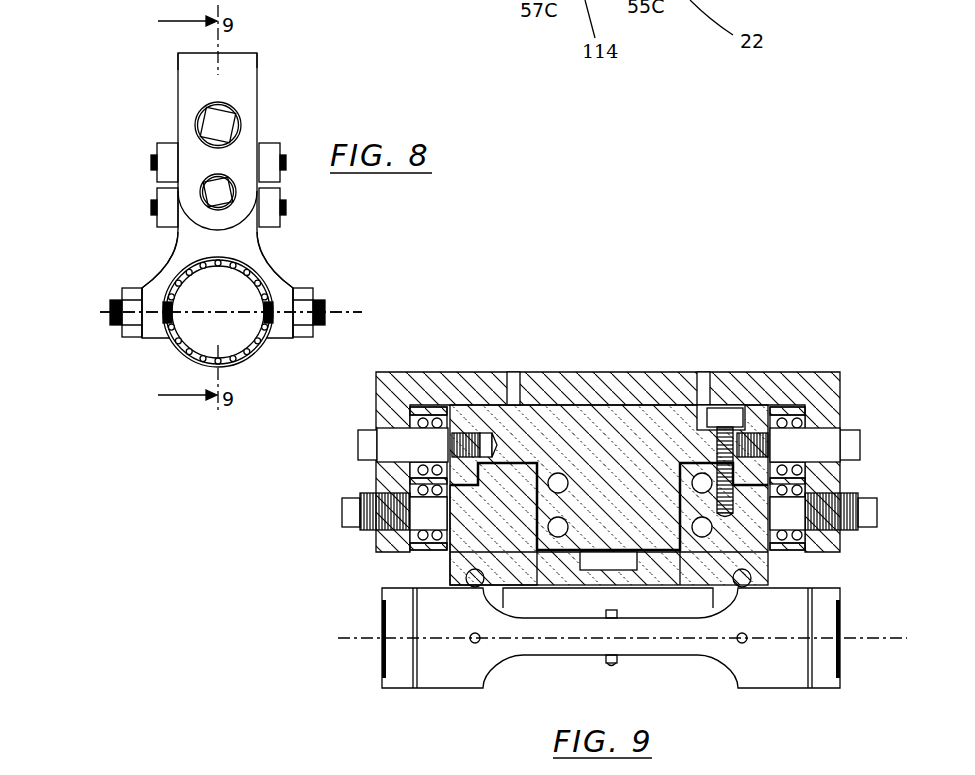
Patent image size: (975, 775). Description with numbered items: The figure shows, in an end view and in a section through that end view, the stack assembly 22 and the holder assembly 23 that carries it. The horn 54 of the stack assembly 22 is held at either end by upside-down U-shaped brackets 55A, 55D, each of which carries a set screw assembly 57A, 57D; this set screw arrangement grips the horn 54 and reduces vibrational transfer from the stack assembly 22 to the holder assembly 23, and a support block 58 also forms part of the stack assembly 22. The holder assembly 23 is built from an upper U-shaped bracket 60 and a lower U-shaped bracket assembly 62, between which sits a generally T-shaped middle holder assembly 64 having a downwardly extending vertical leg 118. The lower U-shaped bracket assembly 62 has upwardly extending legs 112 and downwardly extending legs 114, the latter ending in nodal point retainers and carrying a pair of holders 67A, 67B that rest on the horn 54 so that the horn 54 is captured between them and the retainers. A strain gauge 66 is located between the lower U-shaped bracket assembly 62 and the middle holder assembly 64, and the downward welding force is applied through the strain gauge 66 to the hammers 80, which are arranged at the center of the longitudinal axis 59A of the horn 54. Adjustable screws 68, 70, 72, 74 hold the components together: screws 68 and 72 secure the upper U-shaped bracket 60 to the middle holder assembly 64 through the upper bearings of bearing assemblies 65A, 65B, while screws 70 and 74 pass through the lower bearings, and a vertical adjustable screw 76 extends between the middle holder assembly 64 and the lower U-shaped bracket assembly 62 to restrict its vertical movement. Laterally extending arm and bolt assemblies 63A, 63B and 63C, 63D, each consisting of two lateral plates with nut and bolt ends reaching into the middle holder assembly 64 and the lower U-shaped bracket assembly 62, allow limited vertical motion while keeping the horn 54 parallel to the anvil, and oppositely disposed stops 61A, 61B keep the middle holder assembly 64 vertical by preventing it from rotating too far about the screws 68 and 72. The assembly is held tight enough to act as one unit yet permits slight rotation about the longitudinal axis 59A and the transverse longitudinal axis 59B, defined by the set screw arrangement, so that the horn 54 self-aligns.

In FIG. 8, the stack assembly 22 is at (172, 369).
In FIG. 8, the holder assembly 23 is at (274, 27).
In FIG. 9, the holder assembly 23 is at (672, 340).
In FIG. 9, the horn 54 is at (748, 673).
In FIG. 8, the bracket 55A is at (157, 302).
In FIG. 8, the bracket 55D is at (282, 293).
In FIG. 8, the set screw assembly 57A is at (137, 330).
In FIG. 8, the set screw assembly 57D is at (315, 324).
In FIG. 8, the support block 58 is at (236, 335).
In FIG. 9, the longitudinal axis 59A is at (867, 638).
In FIG. 8, the transverse longitudinal axis 59B is at (344, 304).
In FIG. 8, the upper U-shaped bracket 60 is at (237, 81).
In FIG. 9, the upper U-shaped bracket 60 is at (572, 382).
In FIG. 8, the stop 61A is at (178, 70).
In FIG. 8, the stop 61B is at (257, 68).
In FIG. 9, the lower U-shaped bracket assembly 62 is at (472, 557).
In FIG. 8, the laterally extending arm and bolt assembly 63A is at (170, 152).
In FIG. 8, the laterally extending arm and bolt assembly 63B is at (165, 218).
In FIG. 8, the laterally extending arm and bolt assembly 63C is at (270, 155).
In FIG. 8, the laterally extending arm and bolt assembly 63D is at (270, 216).
In FIG. 9, the middle holder assembly 64 is at (543, 423).
In FIG. 9, the bearing assembly 65A is at (406, 482).
In FIG. 9, the bearing assembly 65B is at (810, 481).
In FIG. 9, the strain gauge 66 is at (592, 560).
In FIG. 9, the holder 67A is at (475, 587).
In FIG. 9, the holder 67B is at (742, 587).
In FIG. 9, the adjustable screw 68 is at (367, 446).
In FIG. 9, the adjustable screw 70 is at (355, 511).
In FIG. 8, the adjustable screw 72 is at (216, 120).
In FIG. 9, the adjustable screw 72 is at (855, 445).
In FIG. 8, the adjustable screw 74 is at (217, 193).
In FIG. 9, the adjustable screw 74 is at (870, 528).
In FIG. 9, the vertical adjustable screw 76 is at (723, 415).
In FIG. 9, the hammer 80 is at (614, 666).
In FIG. 9, the upwardly extending legs 112 is at (765, 545).
In FIG. 8, the downwardly extending legs 114 is at (148, 268).
In FIG. 9, the vertical leg 118 is at (577, 497).